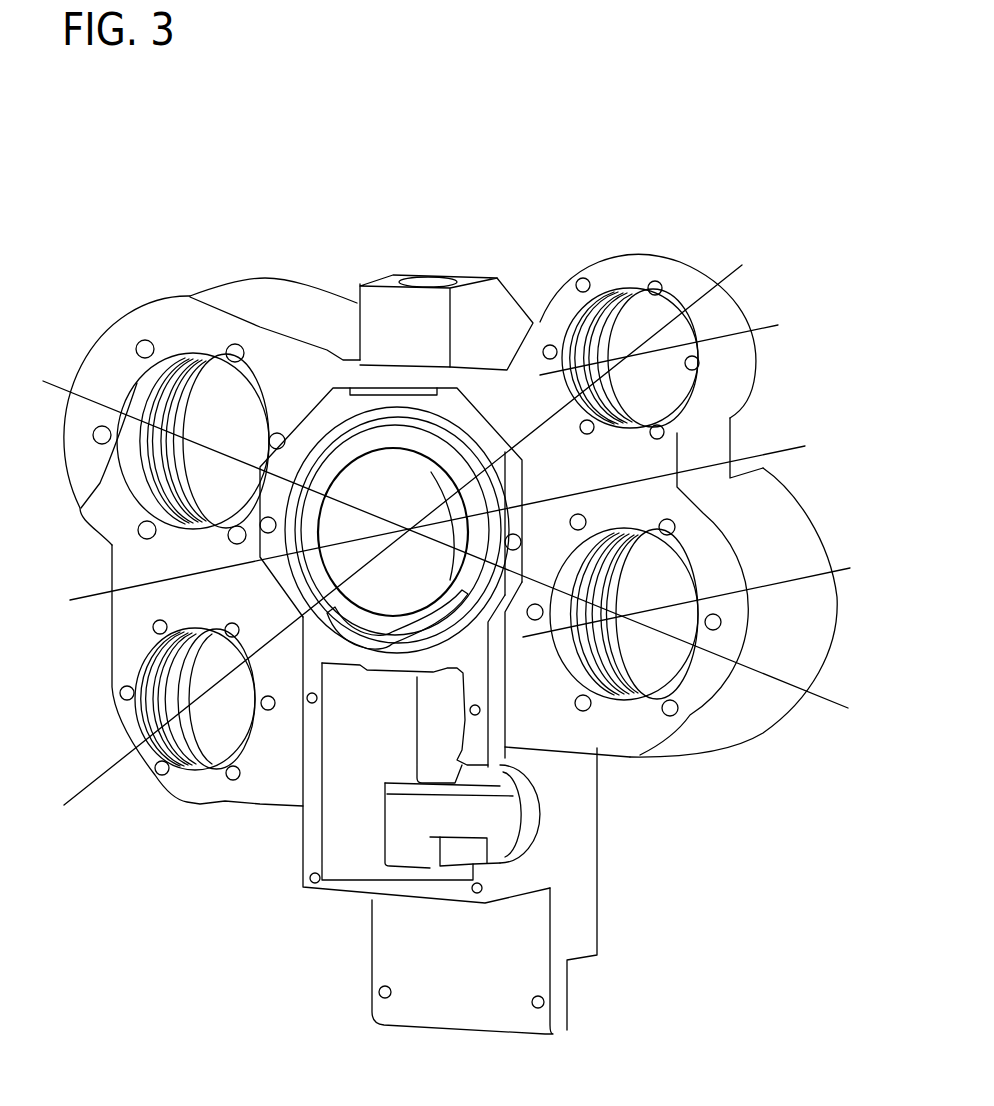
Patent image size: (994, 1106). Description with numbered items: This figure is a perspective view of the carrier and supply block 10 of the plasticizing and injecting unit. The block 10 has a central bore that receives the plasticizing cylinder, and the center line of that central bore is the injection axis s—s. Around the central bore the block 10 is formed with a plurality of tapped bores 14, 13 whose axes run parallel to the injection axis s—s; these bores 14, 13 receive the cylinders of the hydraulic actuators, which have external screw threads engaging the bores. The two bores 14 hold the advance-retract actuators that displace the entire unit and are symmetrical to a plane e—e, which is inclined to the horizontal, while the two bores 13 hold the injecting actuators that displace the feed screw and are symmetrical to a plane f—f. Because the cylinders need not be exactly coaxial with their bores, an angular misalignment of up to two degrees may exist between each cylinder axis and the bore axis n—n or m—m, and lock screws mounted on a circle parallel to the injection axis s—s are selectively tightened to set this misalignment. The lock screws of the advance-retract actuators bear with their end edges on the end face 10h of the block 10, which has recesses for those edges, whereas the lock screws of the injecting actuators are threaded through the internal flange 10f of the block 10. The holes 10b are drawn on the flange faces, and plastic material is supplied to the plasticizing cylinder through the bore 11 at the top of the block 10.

The carrier and supply block 10 is at (300, 272).
The bore 11 is at (422, 273).
The tapped bores 13 is at (153, 453).
The tapped bores 14 is at (577, 308).
The end face 10h is at (175, 332).
The internal flange 10f is at (137, 383).
The bolt holes 10b is at (237, 535).
The plane f— f is at (440, 546).
The plane e— e is at (404, 527).
The injection axis s— s is at (438, 524).
The axis n— n is at (658, 350).
The axis m— m is at (688, 603).